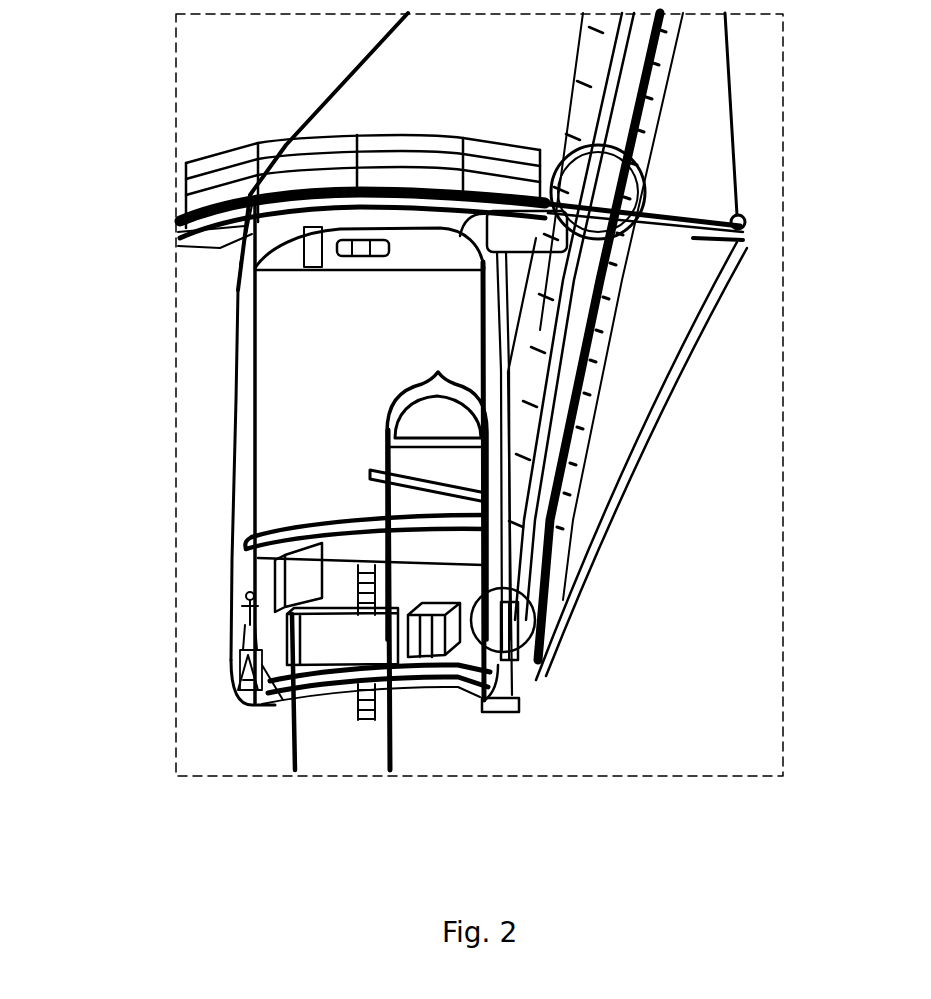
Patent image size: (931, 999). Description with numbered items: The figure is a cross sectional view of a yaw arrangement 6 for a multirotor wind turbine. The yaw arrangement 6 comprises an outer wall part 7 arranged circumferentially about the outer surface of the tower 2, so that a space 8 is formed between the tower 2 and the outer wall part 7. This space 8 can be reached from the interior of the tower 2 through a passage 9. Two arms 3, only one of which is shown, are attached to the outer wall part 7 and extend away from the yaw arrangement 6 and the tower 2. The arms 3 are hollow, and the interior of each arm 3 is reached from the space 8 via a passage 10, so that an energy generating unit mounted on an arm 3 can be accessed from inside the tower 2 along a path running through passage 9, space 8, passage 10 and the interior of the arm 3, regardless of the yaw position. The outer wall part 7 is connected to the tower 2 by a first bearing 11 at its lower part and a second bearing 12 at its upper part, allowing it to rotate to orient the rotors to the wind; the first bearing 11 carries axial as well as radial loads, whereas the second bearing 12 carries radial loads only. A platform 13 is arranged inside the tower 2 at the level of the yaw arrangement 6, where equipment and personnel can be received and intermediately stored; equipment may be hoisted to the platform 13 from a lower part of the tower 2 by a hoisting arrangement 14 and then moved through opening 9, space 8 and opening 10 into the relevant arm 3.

The tower 2 is at (253, 507).
The arm 3 is at (578, 314).
The yaw arrangement 6 is at (193, 383).
The outer wall part 7 is at (232, 462).
The space 8 is at (248, 570).
The passage 9 is at (263, 650).
The passage 10 is at (478, 610).
The first bearing 11 is at (515, 705).
The second bearing 12 is at (224, 237).
The platform 13 is at (417, 658).
The hoisting arrangement 14 is at (437, 407).